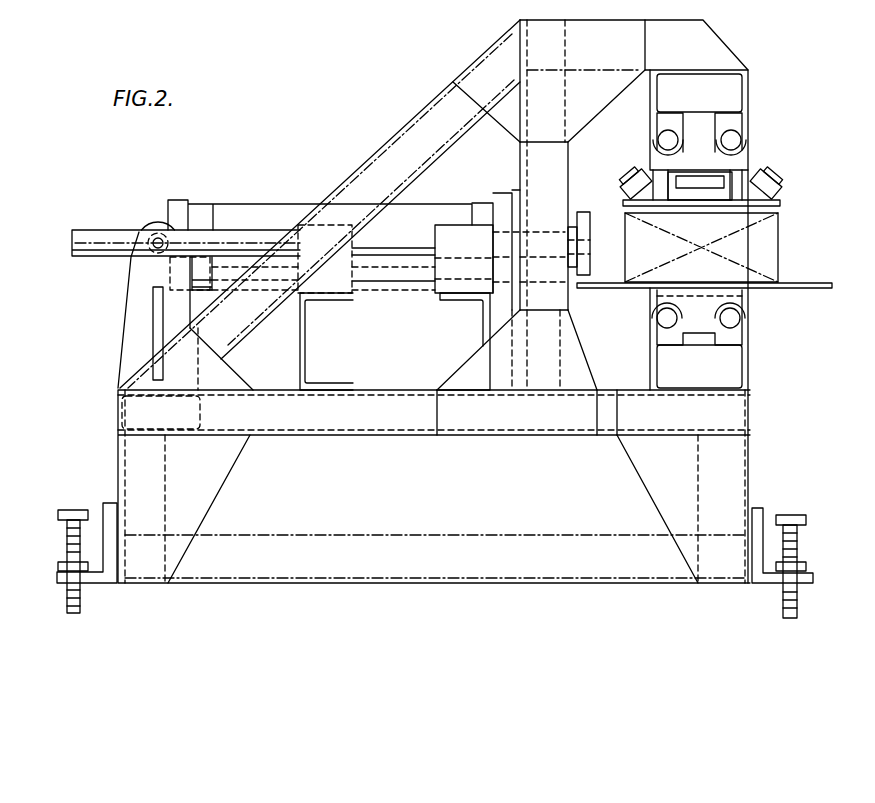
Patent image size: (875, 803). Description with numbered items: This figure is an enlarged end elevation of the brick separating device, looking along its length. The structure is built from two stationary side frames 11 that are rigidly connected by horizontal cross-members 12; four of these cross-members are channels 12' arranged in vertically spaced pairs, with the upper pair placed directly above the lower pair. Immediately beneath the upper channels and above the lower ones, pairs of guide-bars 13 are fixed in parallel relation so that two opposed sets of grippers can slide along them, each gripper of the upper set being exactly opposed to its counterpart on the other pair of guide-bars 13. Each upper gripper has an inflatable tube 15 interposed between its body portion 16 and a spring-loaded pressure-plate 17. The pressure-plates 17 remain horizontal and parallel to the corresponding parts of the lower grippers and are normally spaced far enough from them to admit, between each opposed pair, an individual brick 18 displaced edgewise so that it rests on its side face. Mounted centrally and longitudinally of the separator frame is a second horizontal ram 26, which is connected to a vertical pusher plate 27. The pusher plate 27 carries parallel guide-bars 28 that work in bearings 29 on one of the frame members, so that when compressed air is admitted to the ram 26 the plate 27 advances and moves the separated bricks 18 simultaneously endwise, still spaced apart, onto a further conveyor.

The side frame 11 is at (400, 157).
The horizontal cross-member 12 is at (434, 438).
The channel 12' is at (699, 230).
The guide-bar 13 is at (720, 144).
The inflatable tube 15 is at (717, 193).
The body portion 16 is at (710, 180).
The spring-loaded pressure-plate 17 is at (703, 207).
The brick 18 is at (782, 264).
The second horizontal ram 26 is at (283, 213).
The vertical pusher plate 27 is at (590, 213).
The guide-bar 28 is at (240, 237).
The bearing 29 is at (443, 250).